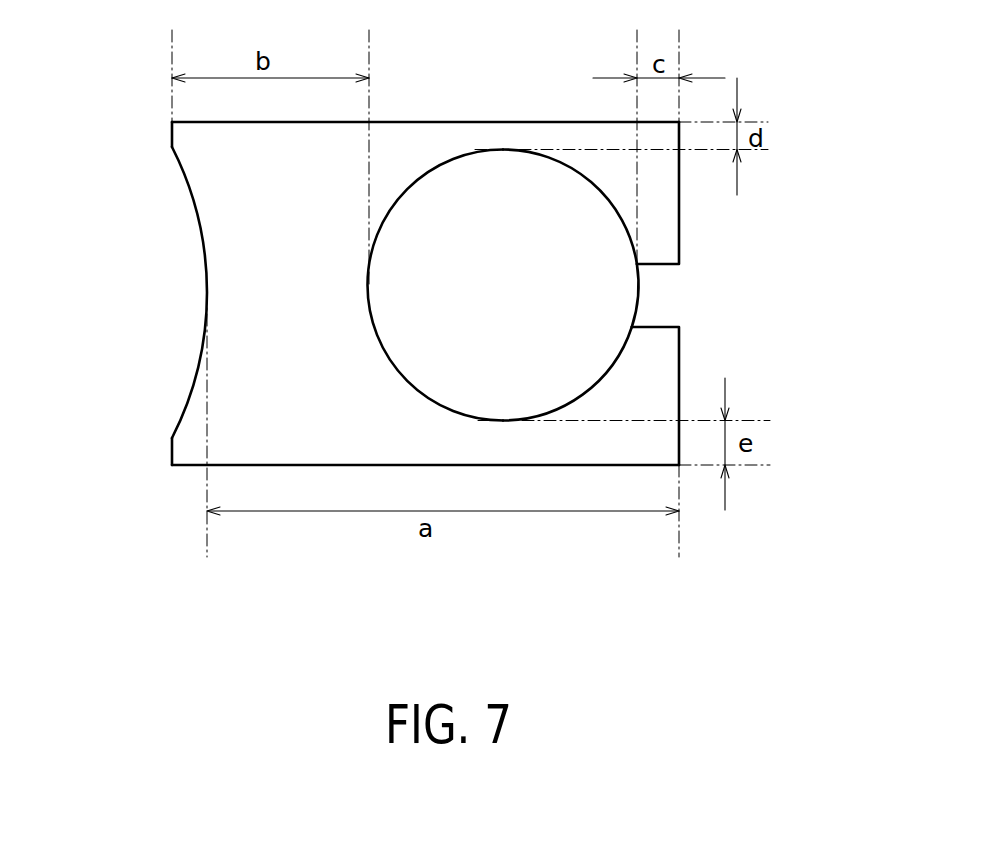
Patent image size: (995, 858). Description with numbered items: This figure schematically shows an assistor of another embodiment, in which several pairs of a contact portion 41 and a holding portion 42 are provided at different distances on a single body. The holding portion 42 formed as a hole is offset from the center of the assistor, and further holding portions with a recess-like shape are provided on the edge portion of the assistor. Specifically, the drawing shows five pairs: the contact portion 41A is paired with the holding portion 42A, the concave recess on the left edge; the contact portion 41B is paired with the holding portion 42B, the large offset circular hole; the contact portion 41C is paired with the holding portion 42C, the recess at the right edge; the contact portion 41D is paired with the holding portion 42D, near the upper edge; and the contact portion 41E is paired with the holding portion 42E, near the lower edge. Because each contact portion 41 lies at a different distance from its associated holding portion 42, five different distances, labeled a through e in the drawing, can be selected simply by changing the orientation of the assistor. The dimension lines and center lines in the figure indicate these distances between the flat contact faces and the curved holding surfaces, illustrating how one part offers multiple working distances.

The contact portion 41 is at (448, 283).
The contact portion 41A is at (680, 248).
The contact portion 41B is at (172, 452).
The contact portion 41C is at (655, 396).
The contact portion 41D is at (503, 122).
The contact portion 41E is at (617, 467).
The holding portion 42 is at (448, 239).
The holding portion 42A is at (207, 289).
The holding portion 42B is at (368, 288).
The holding portion 42C is at (637, 268).
The holding portion 42D is at (500, 150).
The holding portion 42E is at (503, 420).